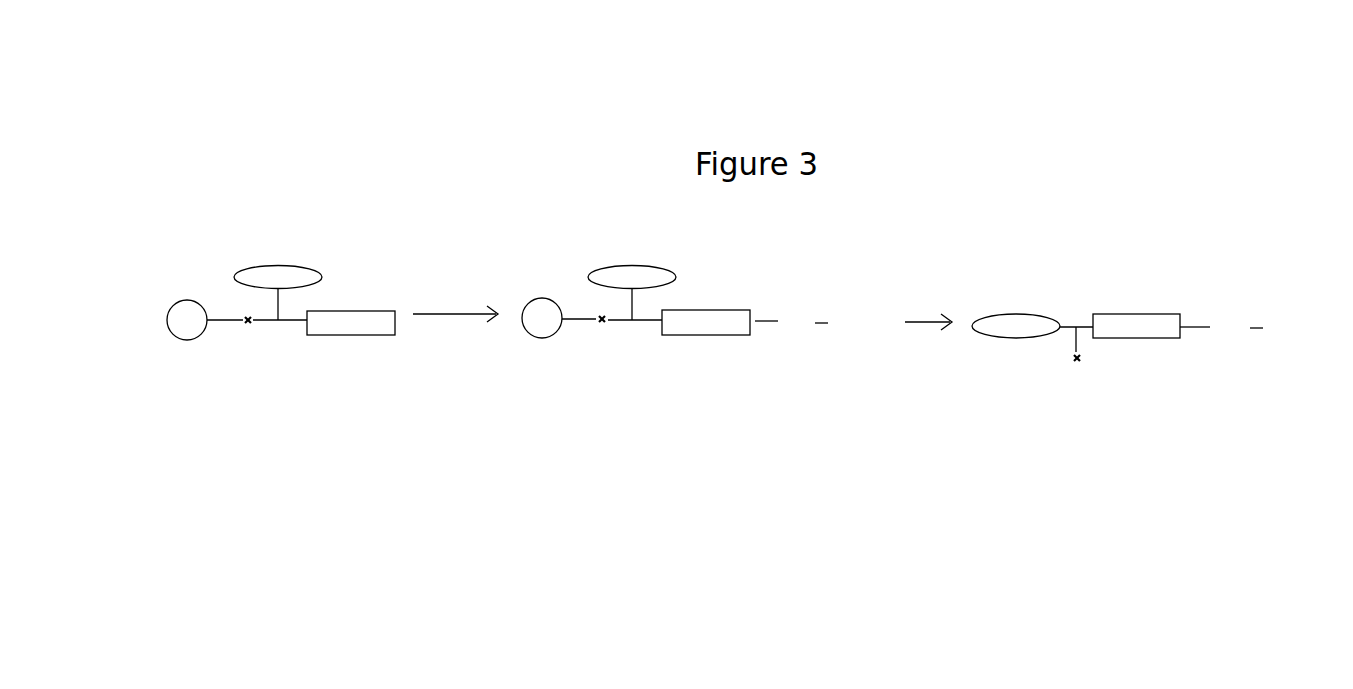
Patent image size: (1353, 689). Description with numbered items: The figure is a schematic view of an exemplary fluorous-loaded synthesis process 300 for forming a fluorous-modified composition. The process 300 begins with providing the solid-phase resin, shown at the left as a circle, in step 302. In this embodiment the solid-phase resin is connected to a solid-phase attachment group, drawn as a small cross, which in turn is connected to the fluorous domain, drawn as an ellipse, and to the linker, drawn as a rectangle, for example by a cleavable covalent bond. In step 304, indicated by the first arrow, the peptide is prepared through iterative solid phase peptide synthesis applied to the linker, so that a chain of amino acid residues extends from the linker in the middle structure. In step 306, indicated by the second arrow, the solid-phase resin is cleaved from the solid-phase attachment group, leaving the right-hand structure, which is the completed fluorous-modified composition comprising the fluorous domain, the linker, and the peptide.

The fluorous-loaded synthesis process 300 is at (1055, 176).
The step of providing the solid-phase resin 302 is at (331, 132).
The step of preparing the peptide 304 is at (460, 272).
The step of cleaving the solid-phase resin 306 is at (922, 352).